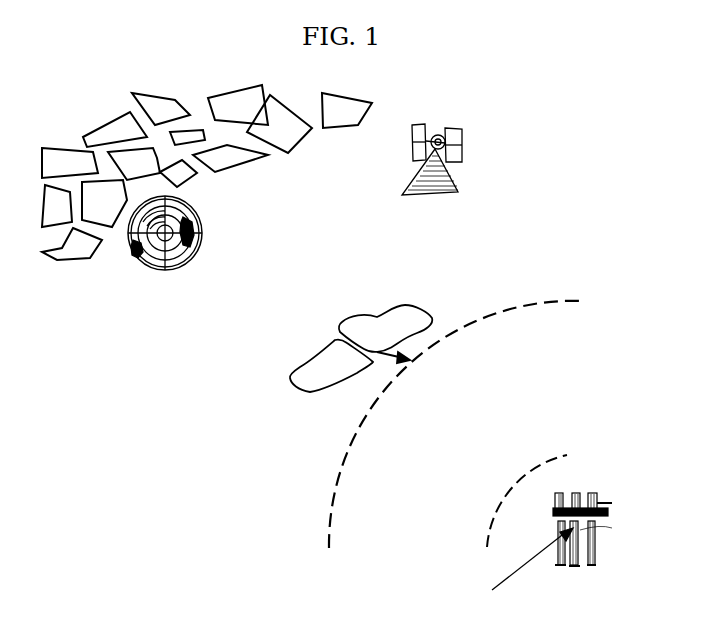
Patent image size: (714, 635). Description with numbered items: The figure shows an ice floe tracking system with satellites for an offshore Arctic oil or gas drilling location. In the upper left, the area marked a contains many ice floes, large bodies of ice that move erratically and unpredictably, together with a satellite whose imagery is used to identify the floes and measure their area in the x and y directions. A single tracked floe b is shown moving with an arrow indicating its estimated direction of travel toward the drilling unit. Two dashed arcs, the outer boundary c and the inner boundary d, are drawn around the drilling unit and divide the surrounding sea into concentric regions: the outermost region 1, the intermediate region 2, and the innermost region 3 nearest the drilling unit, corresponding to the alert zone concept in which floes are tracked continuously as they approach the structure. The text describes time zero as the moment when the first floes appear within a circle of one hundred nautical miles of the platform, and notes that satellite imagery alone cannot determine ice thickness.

The asteroid field with surveying satellite and radar a is at (252, 177).
The captured asteroid with propulsion b is at (361, 348).
The orbital boundary c is at (464, 418).
The drilling unit region d is at (515, 546).
The zone 1 is at (293, 529).
The zone 2 is at (416, 536).
The zone 3 is at (530, 538).